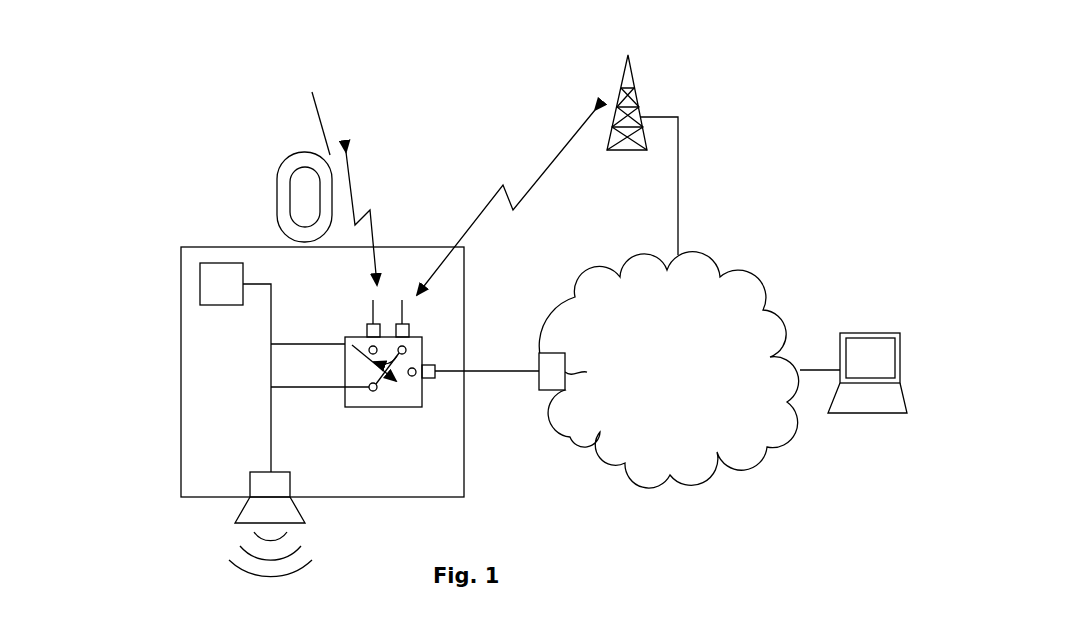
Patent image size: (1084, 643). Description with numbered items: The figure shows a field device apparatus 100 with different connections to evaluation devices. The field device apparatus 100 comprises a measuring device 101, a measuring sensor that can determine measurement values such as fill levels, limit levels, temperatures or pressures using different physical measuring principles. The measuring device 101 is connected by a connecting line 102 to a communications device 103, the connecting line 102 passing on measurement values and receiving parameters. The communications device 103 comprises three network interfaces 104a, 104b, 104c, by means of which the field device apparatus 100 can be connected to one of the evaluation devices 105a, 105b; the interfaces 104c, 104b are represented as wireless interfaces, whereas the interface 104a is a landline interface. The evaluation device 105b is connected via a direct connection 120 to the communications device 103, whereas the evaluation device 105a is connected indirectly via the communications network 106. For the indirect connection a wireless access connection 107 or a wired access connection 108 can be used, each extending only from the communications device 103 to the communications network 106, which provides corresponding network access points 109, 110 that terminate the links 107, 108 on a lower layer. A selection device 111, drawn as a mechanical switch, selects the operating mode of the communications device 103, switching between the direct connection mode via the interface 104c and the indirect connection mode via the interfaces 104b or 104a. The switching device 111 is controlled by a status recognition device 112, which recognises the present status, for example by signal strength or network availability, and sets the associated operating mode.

The field device apparatus 100 is at (150, 273).
The measuring device 101 is at (326, 485).
The connecting line 102 is at (271, 432).
The communications device 103 is at (424, 408).
The network interface 104a is at (435, 367).
The network interface 104b is at (410, 328).
The network interface 104c is at (378, 303).
The evaluation device 105a is at (867, 332).
The evaluation device 105b is at (277, 173).
The communications network 106 is at (760, 248).
The wireless access connection 107 is at (557, 152).
The wired access connection 108 is at (522, 373).
The network access point 109 is at (633, 82).
The network access point 110 is at (580, 373).
The selection device 111 is at (388, 393).
The status recognition device 112 is at (215, 307).
The direct connection 120 is at (350, 180).